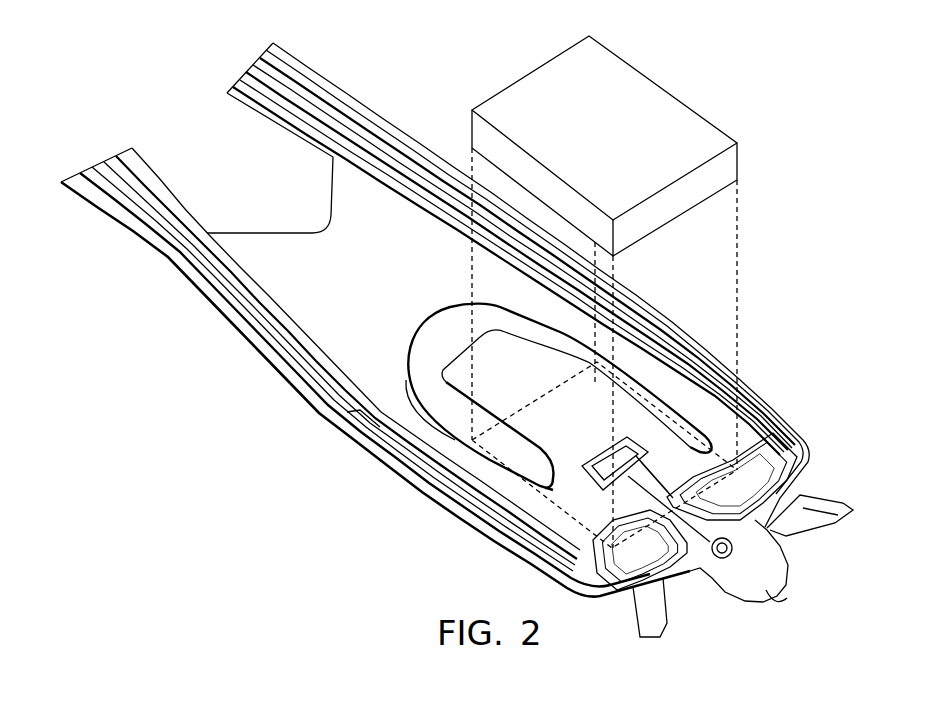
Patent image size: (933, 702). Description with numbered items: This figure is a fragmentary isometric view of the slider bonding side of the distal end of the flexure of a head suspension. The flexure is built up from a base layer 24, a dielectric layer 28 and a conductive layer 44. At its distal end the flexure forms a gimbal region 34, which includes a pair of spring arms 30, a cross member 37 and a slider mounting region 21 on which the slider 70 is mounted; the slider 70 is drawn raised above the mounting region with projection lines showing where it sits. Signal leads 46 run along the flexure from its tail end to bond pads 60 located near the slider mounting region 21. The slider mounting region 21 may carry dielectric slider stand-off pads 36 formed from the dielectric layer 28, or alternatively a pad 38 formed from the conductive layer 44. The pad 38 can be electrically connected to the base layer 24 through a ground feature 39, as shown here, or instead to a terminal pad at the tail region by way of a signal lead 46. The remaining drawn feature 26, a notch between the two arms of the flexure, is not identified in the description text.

The slider mounting region 21 is at (555, 402).
The base layer 24 is at (373, 223).
The notch 26 is at (253, 243).
The dielectric layer 28 is at (163, 252).
The spring arms 30 is at (653, 375).
The gimbal region 34 is at (370, 520).
The dielectric slider stand-off pads 36 is at (713, 455).
The cross member 37 is at (617, 520).
The pad 38 is at (638, 448).
The ground feature 39 is at (727, 548).
The conductive layer 44 is at (313, 397).
The signal leads 46 is at (383, 458).
The bond pads 60 is at (783, 550).
The slider 70 is at (735, 142).